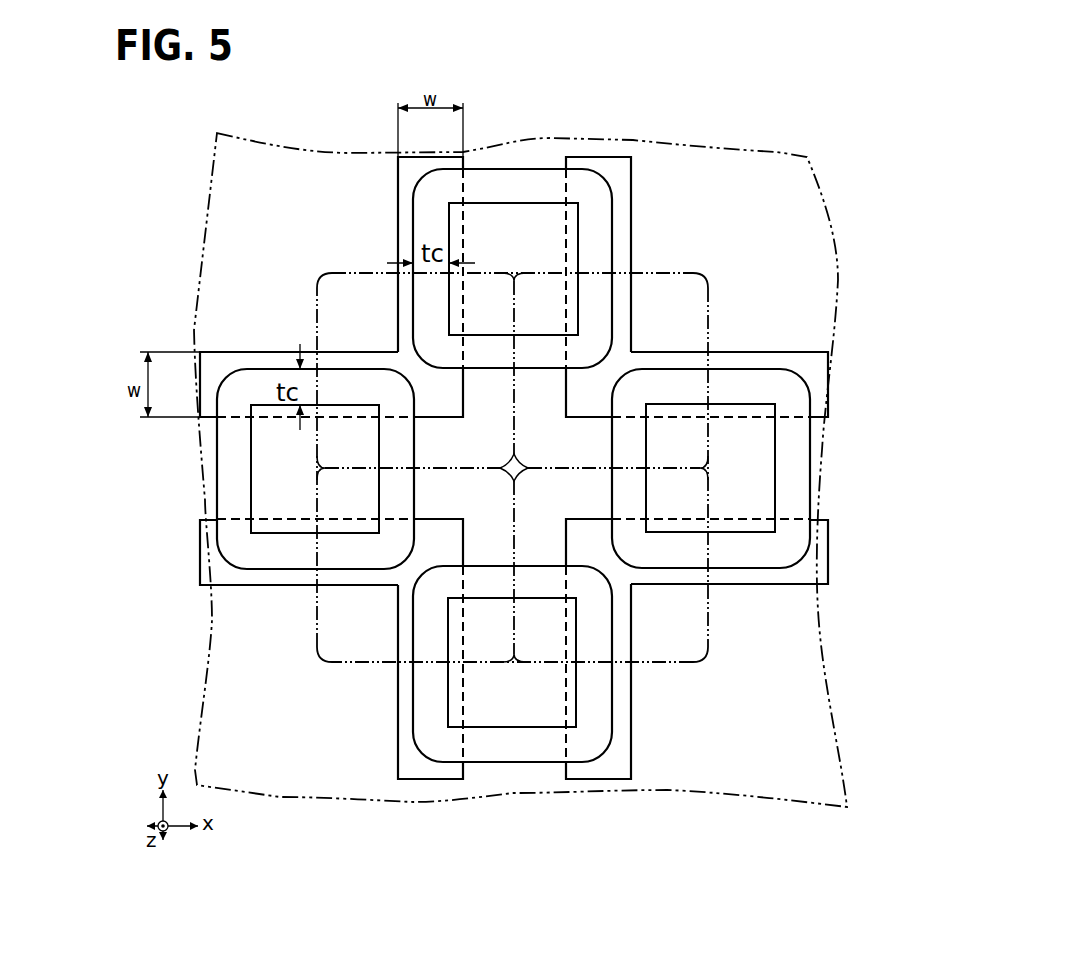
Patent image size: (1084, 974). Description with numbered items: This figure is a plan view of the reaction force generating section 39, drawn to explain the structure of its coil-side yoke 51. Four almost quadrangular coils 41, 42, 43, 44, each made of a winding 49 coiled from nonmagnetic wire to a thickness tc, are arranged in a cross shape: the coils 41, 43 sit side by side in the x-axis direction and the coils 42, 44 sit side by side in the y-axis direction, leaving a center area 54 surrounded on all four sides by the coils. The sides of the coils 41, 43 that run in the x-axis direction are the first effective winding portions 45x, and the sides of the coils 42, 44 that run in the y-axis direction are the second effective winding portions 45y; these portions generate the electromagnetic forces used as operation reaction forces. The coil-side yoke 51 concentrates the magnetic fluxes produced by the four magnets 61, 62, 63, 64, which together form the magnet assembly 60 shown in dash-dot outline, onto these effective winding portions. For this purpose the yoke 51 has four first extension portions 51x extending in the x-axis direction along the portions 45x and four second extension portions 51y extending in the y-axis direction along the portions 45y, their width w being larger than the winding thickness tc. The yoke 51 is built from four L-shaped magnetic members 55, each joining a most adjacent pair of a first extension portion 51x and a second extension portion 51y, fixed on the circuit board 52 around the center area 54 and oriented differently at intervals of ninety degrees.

The reaction force generating section 39 is at (712, 250).
The coil 41 is at (810, 499).
The coil 42 is at (607, 751).
The coil 43 is at (217, 503).
The coil 44 is at (614, 203).
The first effective winding portions 45x is at (263, 385).
The second effective winding portions 45y is at (428, 233).
The winding 49 is at (493, 183).
The coil-side yoke 51 is at (518, 466).
The first extension portions 51x is at (210, 353).
The second extension portions 51y is at (398, 188).
The circuit board 52 is at (787, 152).
The center area 54 is at (503, 490).
The magnetic member 55 is at (203, 438).
The magnet assembly 60 is at (713, 293).
The magnet 61 is at (707, 437).
The magnet 62 is at (710, 657).
The magnet 63 is at (313, 642).
The magnet 64 is at (343, 272).